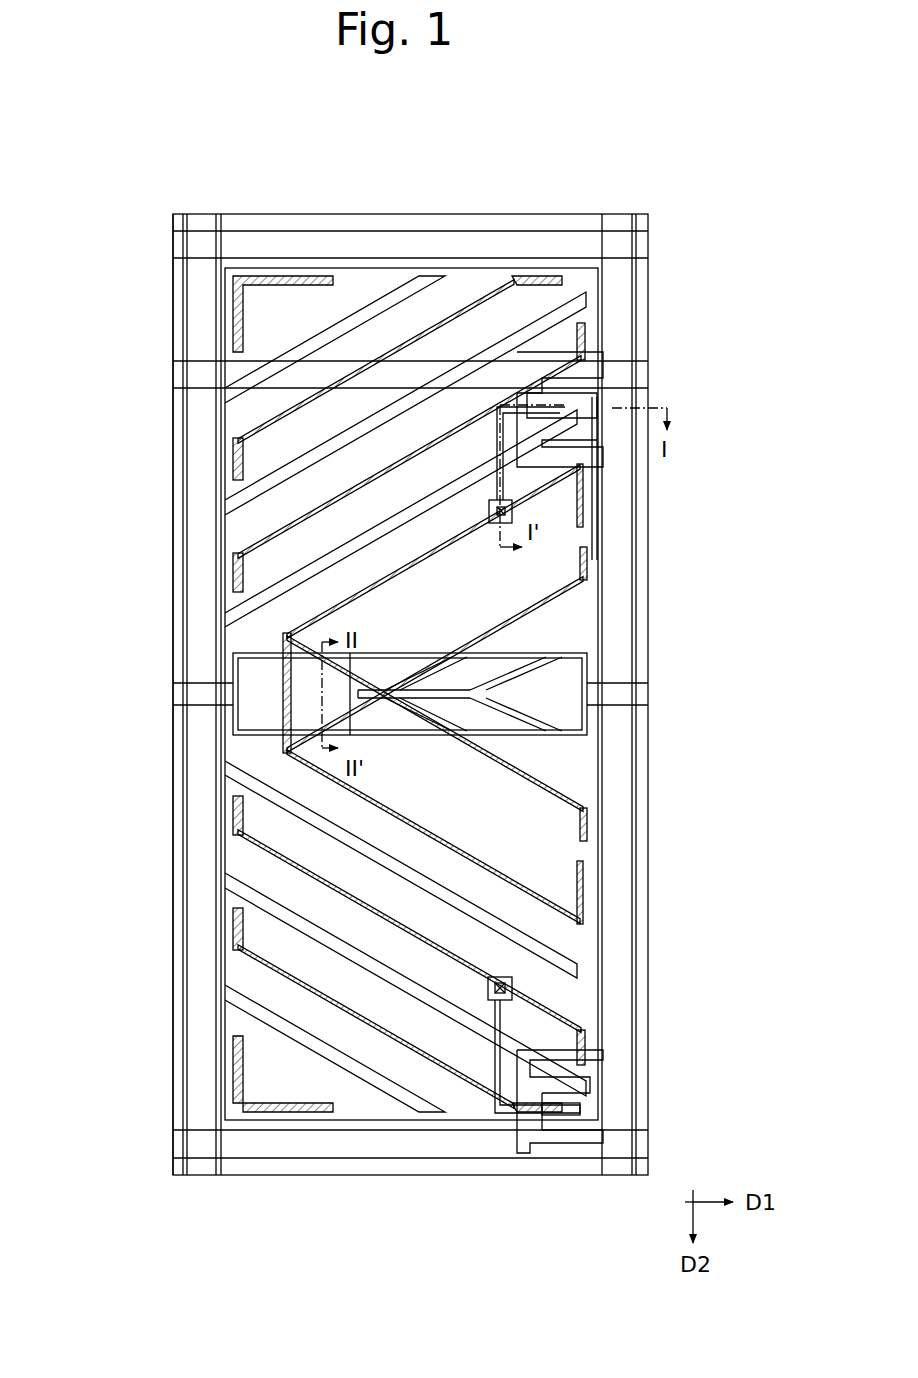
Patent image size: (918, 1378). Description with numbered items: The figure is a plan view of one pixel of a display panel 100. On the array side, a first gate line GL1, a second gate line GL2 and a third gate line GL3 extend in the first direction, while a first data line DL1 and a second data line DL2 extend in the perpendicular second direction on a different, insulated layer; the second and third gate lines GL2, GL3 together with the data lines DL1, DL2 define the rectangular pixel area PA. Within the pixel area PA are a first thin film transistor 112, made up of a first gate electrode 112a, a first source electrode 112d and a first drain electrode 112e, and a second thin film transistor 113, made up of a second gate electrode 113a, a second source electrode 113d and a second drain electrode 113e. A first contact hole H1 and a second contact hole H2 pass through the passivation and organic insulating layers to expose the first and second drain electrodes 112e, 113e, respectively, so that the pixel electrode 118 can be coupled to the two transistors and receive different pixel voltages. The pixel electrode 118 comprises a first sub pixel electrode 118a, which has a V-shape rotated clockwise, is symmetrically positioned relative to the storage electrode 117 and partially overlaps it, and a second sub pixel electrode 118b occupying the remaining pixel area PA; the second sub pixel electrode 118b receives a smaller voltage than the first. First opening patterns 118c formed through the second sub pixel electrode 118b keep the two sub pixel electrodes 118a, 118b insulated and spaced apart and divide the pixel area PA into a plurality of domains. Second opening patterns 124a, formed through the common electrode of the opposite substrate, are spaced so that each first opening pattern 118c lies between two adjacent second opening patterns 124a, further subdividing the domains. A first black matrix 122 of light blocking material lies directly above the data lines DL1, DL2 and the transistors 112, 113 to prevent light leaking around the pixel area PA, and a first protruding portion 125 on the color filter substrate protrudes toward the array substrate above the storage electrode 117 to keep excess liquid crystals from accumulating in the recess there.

The display panel 100 is at (661, 138).
The first gate line GL1 is at (178, 374).
The second gate line GL2 is at (178, 1144).
The third gate line GL3 is at (178, 244).
The first data line DL1 is at (614, 1168).
The second data line DL2 is at (200, 1168).
The first black matrix 122 is at (178, 577).
The pixel electrode 118 is at (62, 752).
The first sub pixel electrode 118a is at (215, 745).
The second sub pixel electrode 118b is at (215, 803).
The first opening patterns 118c is at (360, 957).
The first thin film transistor 112 is at (762, 360).
The first gate electrode 112a is at (597, 485).
The first source electrode 112d is at (600, 372).
The first drain electrode 112e is at (590, 404).
The second thin film transistor 113 is at (762, 1005).
The second gate electrode 113a is at (585, 1050).
The second source electrode 113d is at (587, 1088).
The second drain electrode 113e is at (602, 1130).
The first contact hole H1 is at (516, 511).
The second contact hole H2 is at (516, 988).
The storage electrode 117 is at (588, 745).
The pixel area PA is at (540, 803).
The second opening patterns 124a is at (582, 882).
The first protruding portion 125 is at (405, 735).